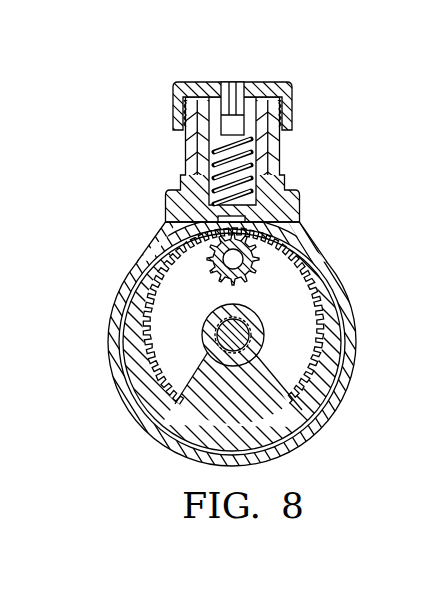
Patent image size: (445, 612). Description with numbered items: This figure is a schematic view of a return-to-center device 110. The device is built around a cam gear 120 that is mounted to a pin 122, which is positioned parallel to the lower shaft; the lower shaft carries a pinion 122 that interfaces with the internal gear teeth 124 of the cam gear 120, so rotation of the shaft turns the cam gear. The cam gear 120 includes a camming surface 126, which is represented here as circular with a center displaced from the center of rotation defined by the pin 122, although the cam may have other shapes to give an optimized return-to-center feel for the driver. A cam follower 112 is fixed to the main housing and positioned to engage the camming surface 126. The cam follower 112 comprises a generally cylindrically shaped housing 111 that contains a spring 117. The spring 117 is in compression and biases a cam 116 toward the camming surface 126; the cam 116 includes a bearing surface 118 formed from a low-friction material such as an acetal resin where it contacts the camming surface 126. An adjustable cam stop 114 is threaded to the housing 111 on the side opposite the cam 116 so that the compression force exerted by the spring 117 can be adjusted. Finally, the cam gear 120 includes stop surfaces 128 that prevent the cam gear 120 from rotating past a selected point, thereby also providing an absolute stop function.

The return-to-center device 110 is at (219, 126).
The housing 111 is at (183, 153).
The cam follower 112 is at (163, 72).
The adjustable cam stop 114 is at (183, 113).
The cam 116 is at (215, 172).
The spring 117 is at (217, 133).
The bearing surface 118 is at (300, 212).
The cam gear 120 is at (127, 265).
The pinion 122 is at (215, 277).
The internal gear teeth 124 is at (134, 352).
The camming surface 126 is at (343, 268).
The stop surfaces 128 is at (281, 389).